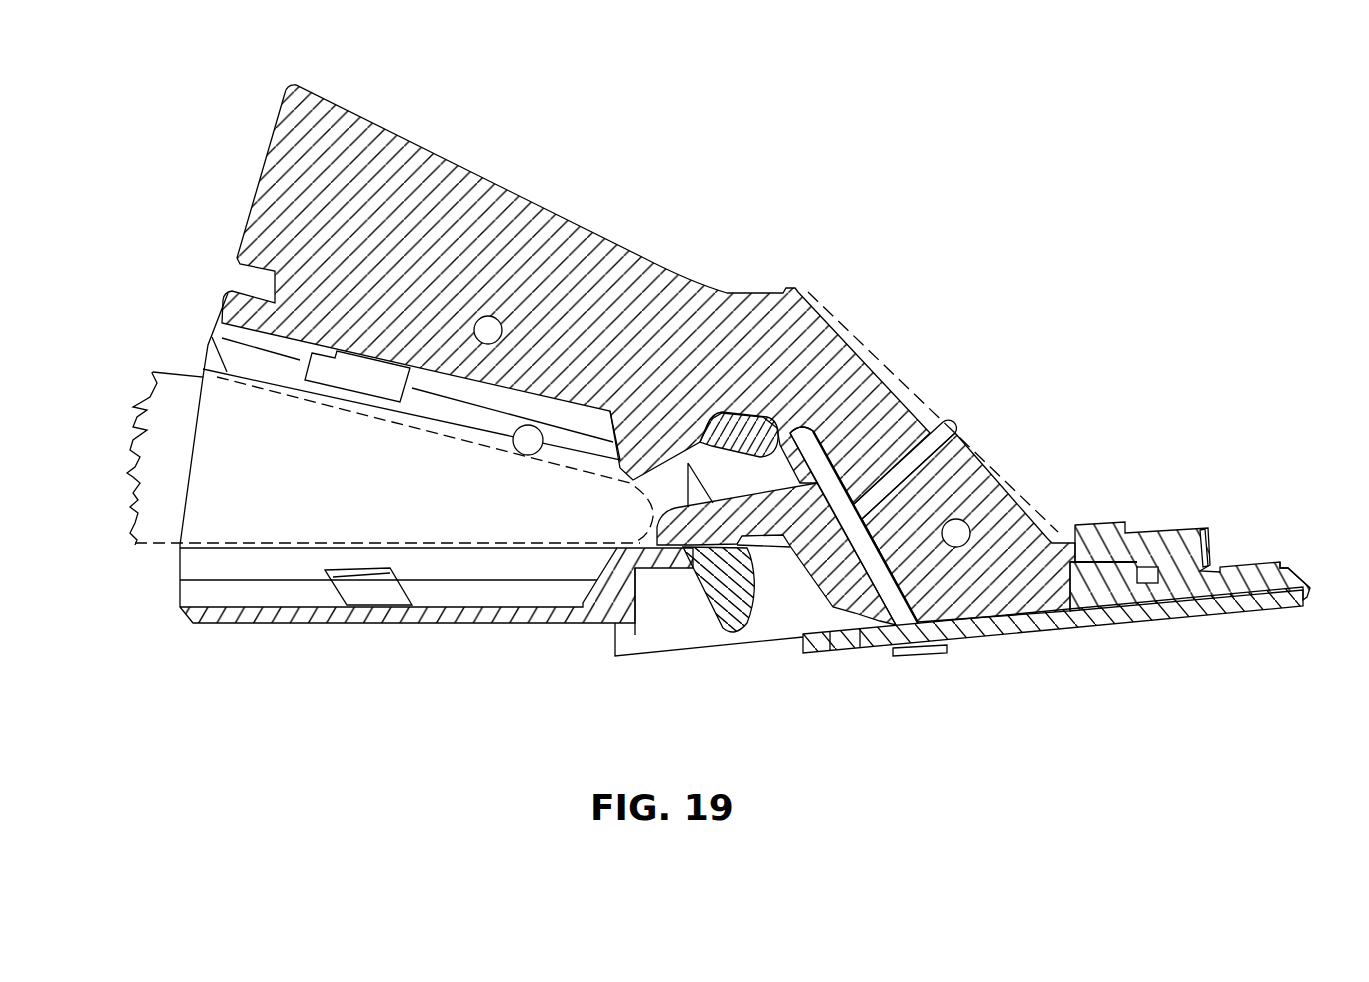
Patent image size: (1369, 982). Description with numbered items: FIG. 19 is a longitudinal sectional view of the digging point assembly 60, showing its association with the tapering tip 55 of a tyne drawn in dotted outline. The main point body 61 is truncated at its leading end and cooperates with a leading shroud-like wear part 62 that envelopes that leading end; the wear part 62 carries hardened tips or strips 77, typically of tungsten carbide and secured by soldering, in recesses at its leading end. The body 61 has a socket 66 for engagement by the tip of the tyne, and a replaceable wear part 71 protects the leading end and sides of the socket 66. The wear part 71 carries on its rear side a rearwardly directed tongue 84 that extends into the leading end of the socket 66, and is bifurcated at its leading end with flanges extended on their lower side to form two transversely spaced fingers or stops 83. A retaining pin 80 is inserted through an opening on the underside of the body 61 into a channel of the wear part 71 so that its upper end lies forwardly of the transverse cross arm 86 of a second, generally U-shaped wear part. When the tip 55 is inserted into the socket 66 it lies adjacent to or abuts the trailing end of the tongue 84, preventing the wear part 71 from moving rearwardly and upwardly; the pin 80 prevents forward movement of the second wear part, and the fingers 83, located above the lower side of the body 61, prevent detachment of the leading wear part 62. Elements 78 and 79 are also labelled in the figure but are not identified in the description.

The tapering tip of a tyne 55 is at (153, 372).
The digging point assembly 60 is at (593, 200).
The main point body 61 is at (992, 122).
The leading shroud-like wear part 62 is at (1205, 483).
The socket 66 is at (225, 373).
The wear part 71 is at (797, 583).
The hardened tips or strips 77 is at (1293, 563).
The base plate 78 is at (1007, 645).
The plate segment 79 is at (880, 651).
The retaining pin 80 is at (848, 516).
The fingers or stops 83 is at (923, 654).
The tongue 84 is at (688, 465).
The transverse cross arm 86 is at (760, 418).